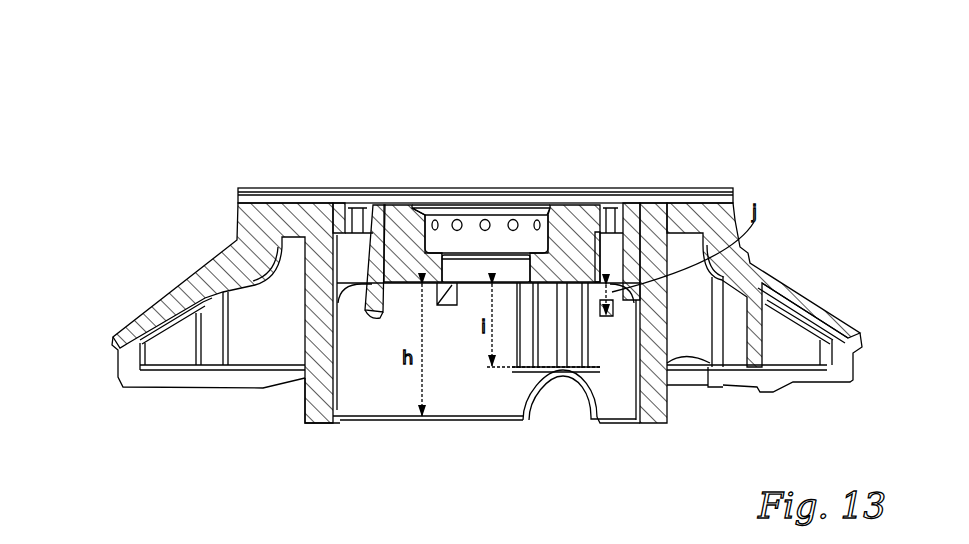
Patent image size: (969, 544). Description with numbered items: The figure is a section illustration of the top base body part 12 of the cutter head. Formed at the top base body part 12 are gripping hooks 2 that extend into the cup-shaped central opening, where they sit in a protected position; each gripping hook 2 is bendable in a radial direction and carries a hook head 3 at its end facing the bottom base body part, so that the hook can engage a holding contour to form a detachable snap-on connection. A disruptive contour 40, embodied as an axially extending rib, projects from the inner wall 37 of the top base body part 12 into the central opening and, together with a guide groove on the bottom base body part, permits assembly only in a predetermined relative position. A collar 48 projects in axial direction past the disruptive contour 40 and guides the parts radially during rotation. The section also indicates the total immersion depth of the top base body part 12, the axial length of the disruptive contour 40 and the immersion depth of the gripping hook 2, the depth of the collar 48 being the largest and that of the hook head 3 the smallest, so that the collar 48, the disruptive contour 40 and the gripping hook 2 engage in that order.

The top base body part 12 is at (157, 210).
The gripping hook 2 is at (368, 266).
The hook head 3 is at (374, 320).
The inner wall 37 is at (348, 392).
The disruptive contour 40 is at (522, 380).
The collar 48 is at (515, 408).